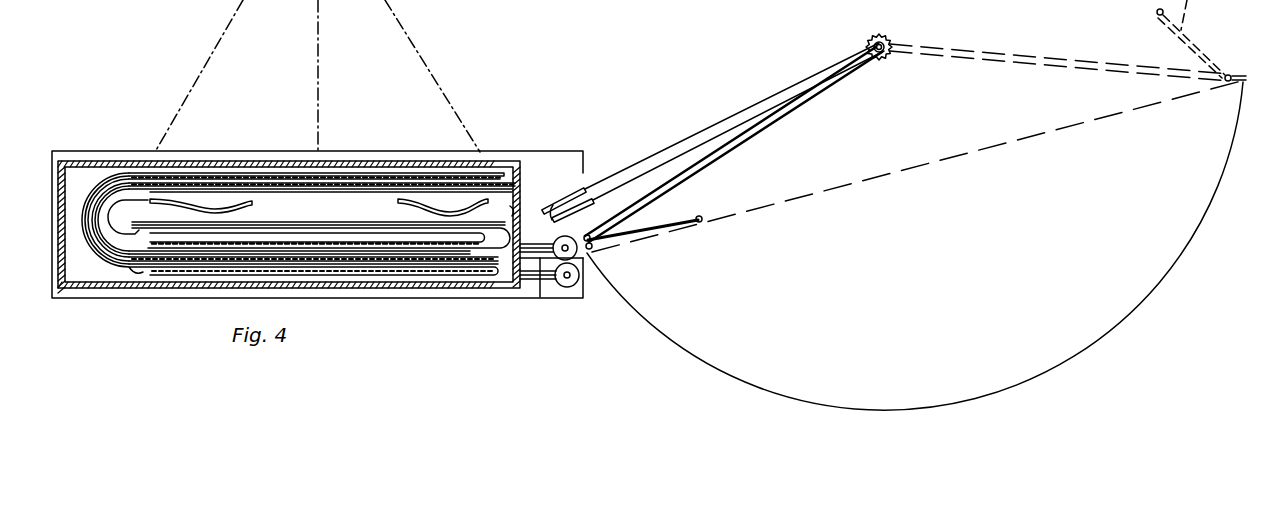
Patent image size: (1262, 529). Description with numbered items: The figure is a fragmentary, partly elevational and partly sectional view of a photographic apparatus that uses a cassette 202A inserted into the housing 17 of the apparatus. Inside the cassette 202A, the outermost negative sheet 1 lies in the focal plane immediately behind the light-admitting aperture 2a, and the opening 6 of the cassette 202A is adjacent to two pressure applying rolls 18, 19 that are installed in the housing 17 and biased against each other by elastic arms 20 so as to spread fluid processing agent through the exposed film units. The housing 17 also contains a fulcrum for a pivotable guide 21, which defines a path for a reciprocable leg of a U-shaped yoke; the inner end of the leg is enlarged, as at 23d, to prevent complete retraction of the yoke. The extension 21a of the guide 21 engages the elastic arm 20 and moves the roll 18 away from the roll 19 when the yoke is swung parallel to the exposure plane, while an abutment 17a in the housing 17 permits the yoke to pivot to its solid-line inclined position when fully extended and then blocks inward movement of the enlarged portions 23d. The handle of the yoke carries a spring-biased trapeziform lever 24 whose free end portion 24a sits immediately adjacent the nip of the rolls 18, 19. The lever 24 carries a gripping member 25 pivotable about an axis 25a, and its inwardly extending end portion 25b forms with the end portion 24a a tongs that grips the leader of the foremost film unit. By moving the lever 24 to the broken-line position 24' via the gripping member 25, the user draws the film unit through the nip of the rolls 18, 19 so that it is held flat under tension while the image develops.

The negative sheet 1 is at (374, 156).
The light-admitting aperture 2a is at (230, 153).
The opening 6 is at (518, 211).
The housing 17 is at (545, 290).
The abutment 17a is at (530, 295).
The pressure applying roll 18 is at (548, 296).
The pressure applying roll 19 is at (582, 292).
The elastic arm 20 is at (538, 290).
The pivotable guide 21 is at (580, 182).
The extension 21a is at (530, 292).
The enlarged inner end portion 23d is at (560, 192).
The trapeziform lever 24 is at (915, 222).
The broken-line position of lever 24' is at (1068, 40).
The free end portion 24a is at (598, 264).
The gripping member 25 is at (688, 220).
The axis 25a is at (628, 170).
The end portion of gripping member 25b is at (596, 251).
The cassette 202A is at (95, 160).